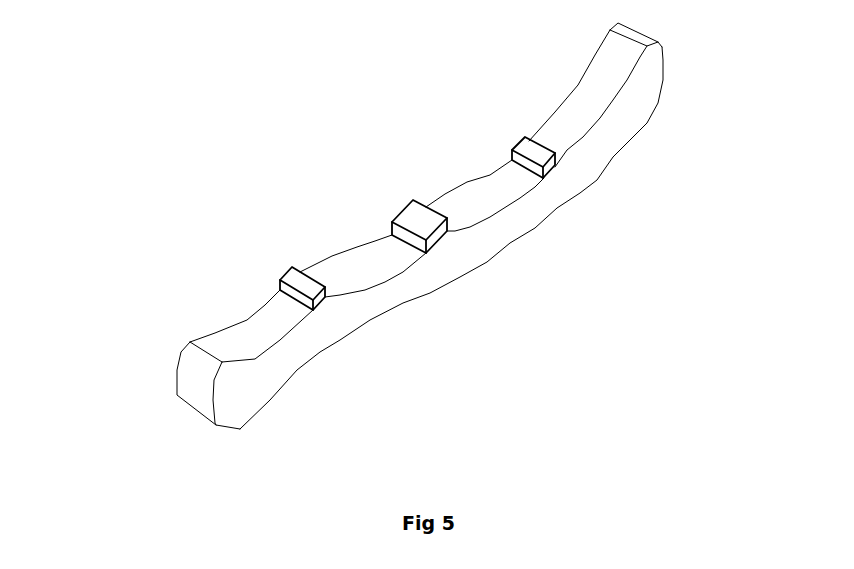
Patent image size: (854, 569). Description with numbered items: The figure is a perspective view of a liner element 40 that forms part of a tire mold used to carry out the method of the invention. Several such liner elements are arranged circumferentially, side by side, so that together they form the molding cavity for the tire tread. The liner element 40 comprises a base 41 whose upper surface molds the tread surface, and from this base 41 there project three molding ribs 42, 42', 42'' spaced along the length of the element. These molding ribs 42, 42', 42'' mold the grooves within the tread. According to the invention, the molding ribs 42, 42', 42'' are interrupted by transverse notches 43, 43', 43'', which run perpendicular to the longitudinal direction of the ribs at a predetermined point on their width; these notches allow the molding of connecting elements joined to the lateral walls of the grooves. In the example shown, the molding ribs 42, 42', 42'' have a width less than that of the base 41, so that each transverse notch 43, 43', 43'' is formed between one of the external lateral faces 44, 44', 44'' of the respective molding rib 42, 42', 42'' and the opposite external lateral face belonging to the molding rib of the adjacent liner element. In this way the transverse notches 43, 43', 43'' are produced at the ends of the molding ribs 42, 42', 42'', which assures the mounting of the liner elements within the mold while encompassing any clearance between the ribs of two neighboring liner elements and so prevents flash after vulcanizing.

The liner element 40 is at (193, 402).
The base 41 is at (257, 397).
The molding rib 42 is at (251, 264).
The molding rib 42' is at (379, 206).
The molding rib 42'' is at (483, 134).
The transverse notch 43 is at (359, 364).
The transverse notch 43' is at (474, 294).
The transverse notch 43'' is at (577, 240).
The external lateral face 44 is at (283, 330).
The external lateral face 44' is at (496, 277).
The external lateral face 44'' is at (605, 224).